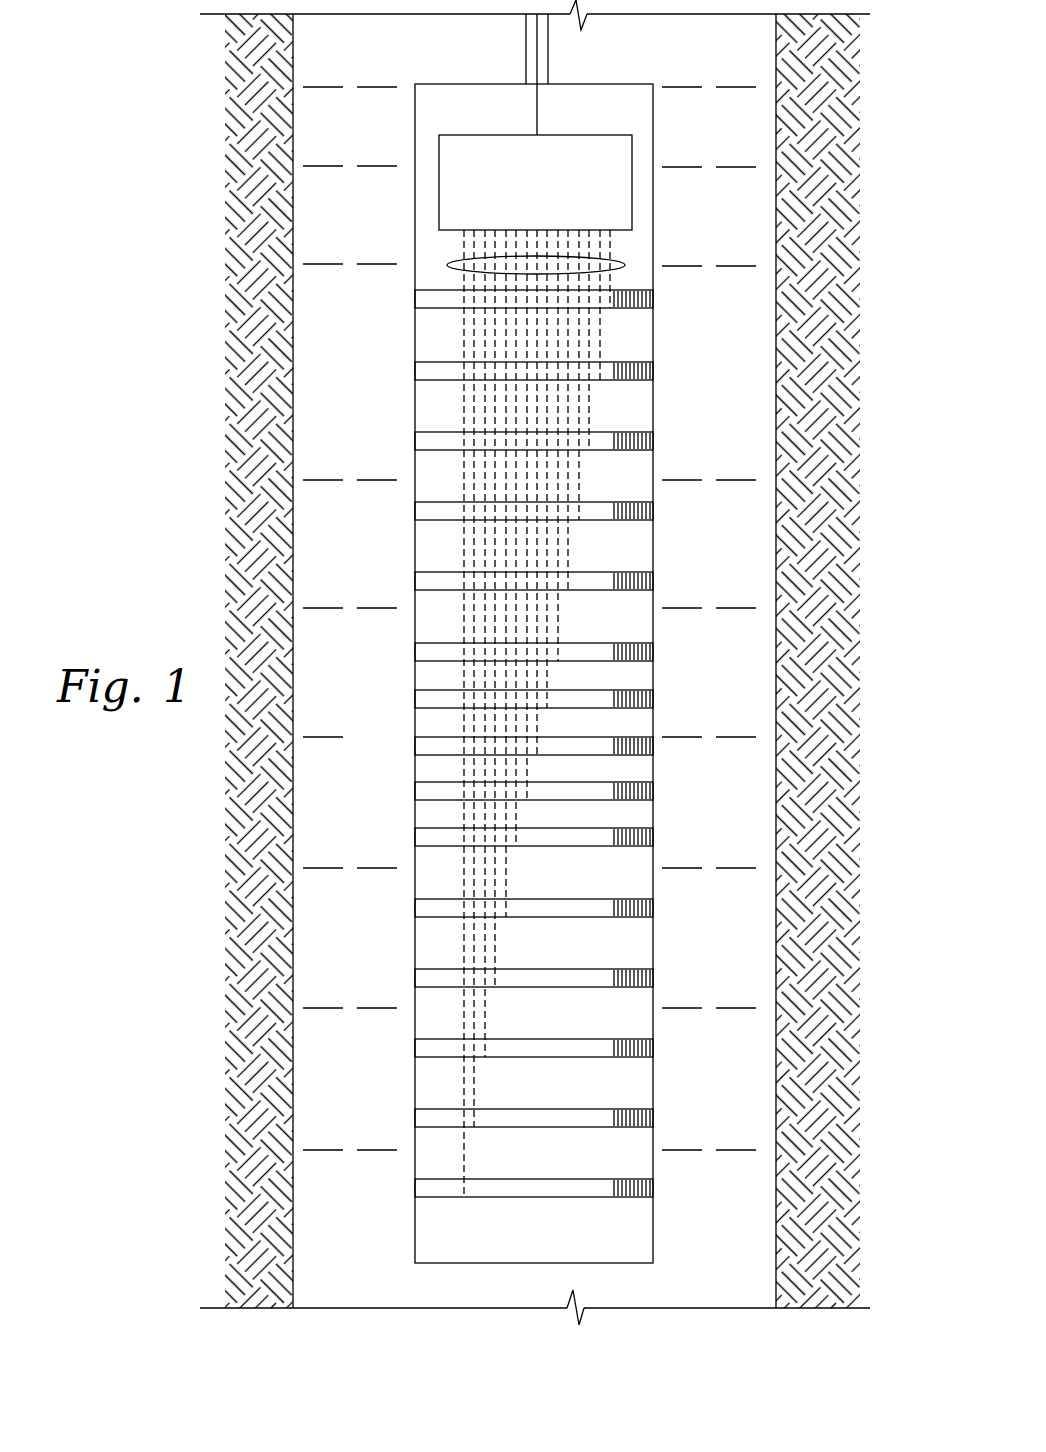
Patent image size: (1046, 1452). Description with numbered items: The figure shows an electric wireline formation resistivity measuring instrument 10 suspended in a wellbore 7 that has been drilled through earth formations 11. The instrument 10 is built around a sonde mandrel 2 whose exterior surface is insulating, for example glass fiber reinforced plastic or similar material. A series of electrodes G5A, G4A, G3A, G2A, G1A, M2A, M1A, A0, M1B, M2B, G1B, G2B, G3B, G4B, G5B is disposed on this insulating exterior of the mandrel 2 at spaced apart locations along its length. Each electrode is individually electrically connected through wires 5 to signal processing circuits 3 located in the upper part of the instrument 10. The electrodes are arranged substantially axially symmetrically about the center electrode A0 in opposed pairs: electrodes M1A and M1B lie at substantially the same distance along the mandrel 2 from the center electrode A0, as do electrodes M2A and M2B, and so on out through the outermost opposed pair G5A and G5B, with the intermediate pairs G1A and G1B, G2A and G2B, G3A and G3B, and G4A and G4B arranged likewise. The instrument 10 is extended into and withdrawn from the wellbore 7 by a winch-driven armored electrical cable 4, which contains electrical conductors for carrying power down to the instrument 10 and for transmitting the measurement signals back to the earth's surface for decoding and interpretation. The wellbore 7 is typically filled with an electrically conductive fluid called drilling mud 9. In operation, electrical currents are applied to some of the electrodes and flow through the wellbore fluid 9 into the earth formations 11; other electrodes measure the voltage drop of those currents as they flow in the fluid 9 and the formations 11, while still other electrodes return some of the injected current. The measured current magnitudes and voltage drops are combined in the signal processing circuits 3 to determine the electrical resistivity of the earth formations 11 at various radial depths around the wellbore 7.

The sonde mandrel 2 is at (417, 129).
The signal processing circuits 3 is at (575, 134).
The armored electrical cable 4 is at (526, 51).
The wires 5 is at (447, 263).
The wellbore 7 is at (760, 127).
The drilling mud 9 is at (718, 720).
The instrument 10 is at (402, 207).
The earth formations 11 is at (863, 720).
The electrode G5A is at (415, 299).
The electrode G4A is at (415, 371).
The electrode G3A is at (415, 441).
The electrode G2A is at (415, 511).
The electrode G1A is at (415, 581).
The electrode M2A is at (415, 652).
The electrode M1A is at (415, 699).
The center electrode A0 is at (415, 746).
The electrode M1B is at (415, 791).
The electrode M2B is at (415, 837).
The electrode G1B is at (415, 908).
The electrode G2B is at (415, 978).
The electrode G3B is at (415, 1048).
The electrode G4B is at (415, 1118).
The electrode G5B is at (415, 1188).